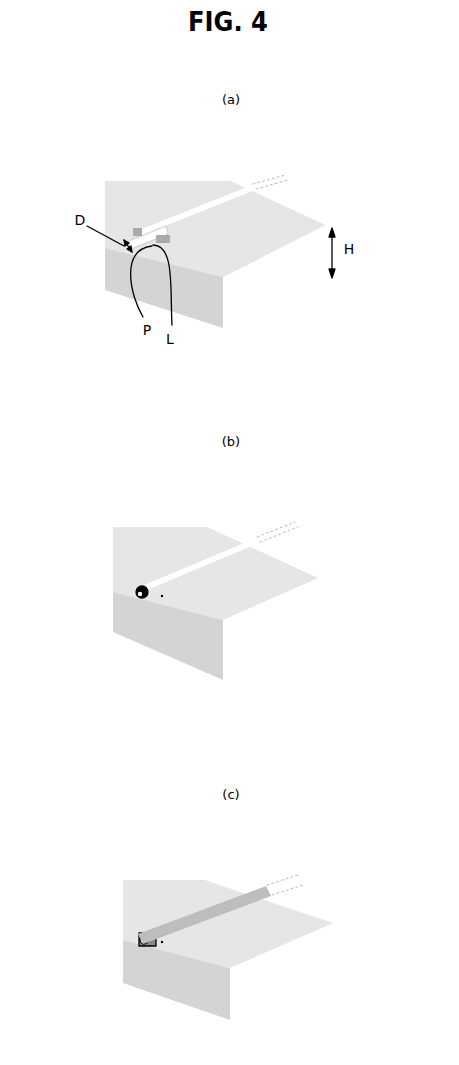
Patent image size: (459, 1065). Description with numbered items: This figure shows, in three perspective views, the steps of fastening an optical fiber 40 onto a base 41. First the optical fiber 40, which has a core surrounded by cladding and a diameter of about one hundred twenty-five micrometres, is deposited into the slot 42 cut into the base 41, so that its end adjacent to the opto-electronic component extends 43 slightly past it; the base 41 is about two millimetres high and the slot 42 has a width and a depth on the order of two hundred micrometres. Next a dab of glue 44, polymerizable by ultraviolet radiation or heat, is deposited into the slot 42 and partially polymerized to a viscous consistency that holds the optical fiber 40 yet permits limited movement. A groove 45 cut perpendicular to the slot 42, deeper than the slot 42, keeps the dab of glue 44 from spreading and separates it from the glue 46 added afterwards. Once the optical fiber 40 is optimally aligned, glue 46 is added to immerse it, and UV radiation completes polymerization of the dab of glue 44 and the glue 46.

The optical fiber 40 is at (252, 188).
The base 41 is at (293, 217).
The slot 42 is at (210, 203).
The extension of the fiber end 43 is at (133, 253).
The dab of glue 44 is at (143, 592).
The groove 45 is at (162, 238).
The glue added afterwards 46 is at (195, 917).